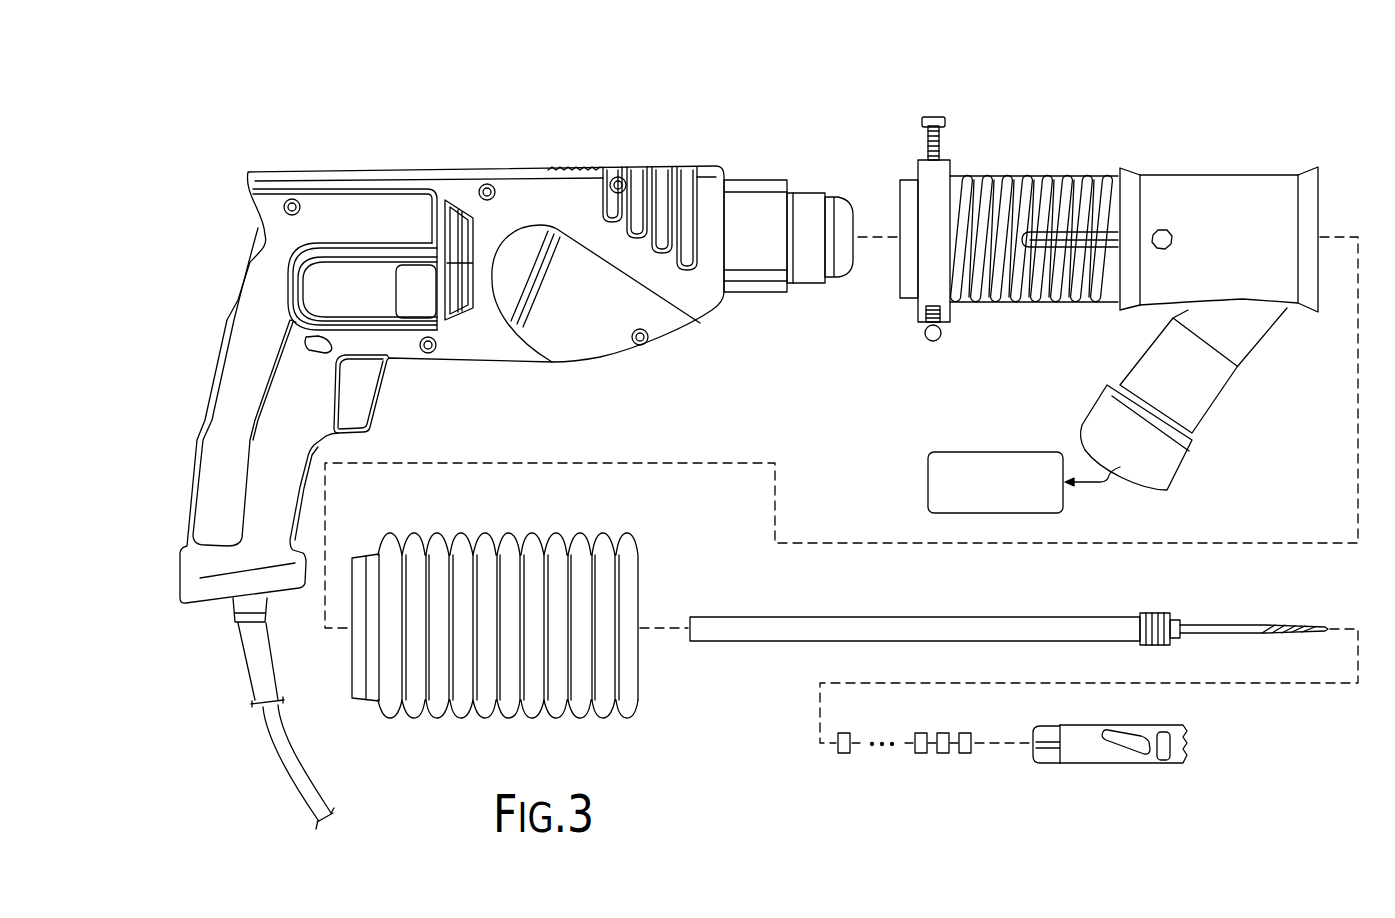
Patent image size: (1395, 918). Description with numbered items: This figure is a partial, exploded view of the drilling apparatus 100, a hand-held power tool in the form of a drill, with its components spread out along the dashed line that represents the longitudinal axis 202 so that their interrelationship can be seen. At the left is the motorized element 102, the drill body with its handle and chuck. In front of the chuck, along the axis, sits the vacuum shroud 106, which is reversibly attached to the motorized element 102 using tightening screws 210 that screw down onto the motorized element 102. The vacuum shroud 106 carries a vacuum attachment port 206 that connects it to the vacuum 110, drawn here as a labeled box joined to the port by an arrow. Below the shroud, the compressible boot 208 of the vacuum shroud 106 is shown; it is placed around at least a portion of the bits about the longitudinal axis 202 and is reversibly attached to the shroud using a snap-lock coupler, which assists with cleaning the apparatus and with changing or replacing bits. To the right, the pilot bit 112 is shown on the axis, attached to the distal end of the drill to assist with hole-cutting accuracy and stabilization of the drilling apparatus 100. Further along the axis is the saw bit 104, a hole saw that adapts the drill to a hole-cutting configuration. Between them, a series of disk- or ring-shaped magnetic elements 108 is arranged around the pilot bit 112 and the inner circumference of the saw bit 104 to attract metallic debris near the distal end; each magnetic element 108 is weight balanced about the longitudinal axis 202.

The drilling apparatus 100 is at (890, 72).
The motorized element 102 is at (450, 170).
The saw bit 104 is at (1105, 727).
The vacuum shroud 106 is at (1242, 173).
The magnetic element 108 is at (842, 757).
The vacuum 110 is at (927, 472).
The pilot bit 112 is at (1263, 624).
The longitudinal axis 202 is at (1357, 400).
The vacuum attachment port 206 is at (1200, 413).
The compressible boot 208 is at (640, 672).
The tightening screws 210 is at (943, 323).